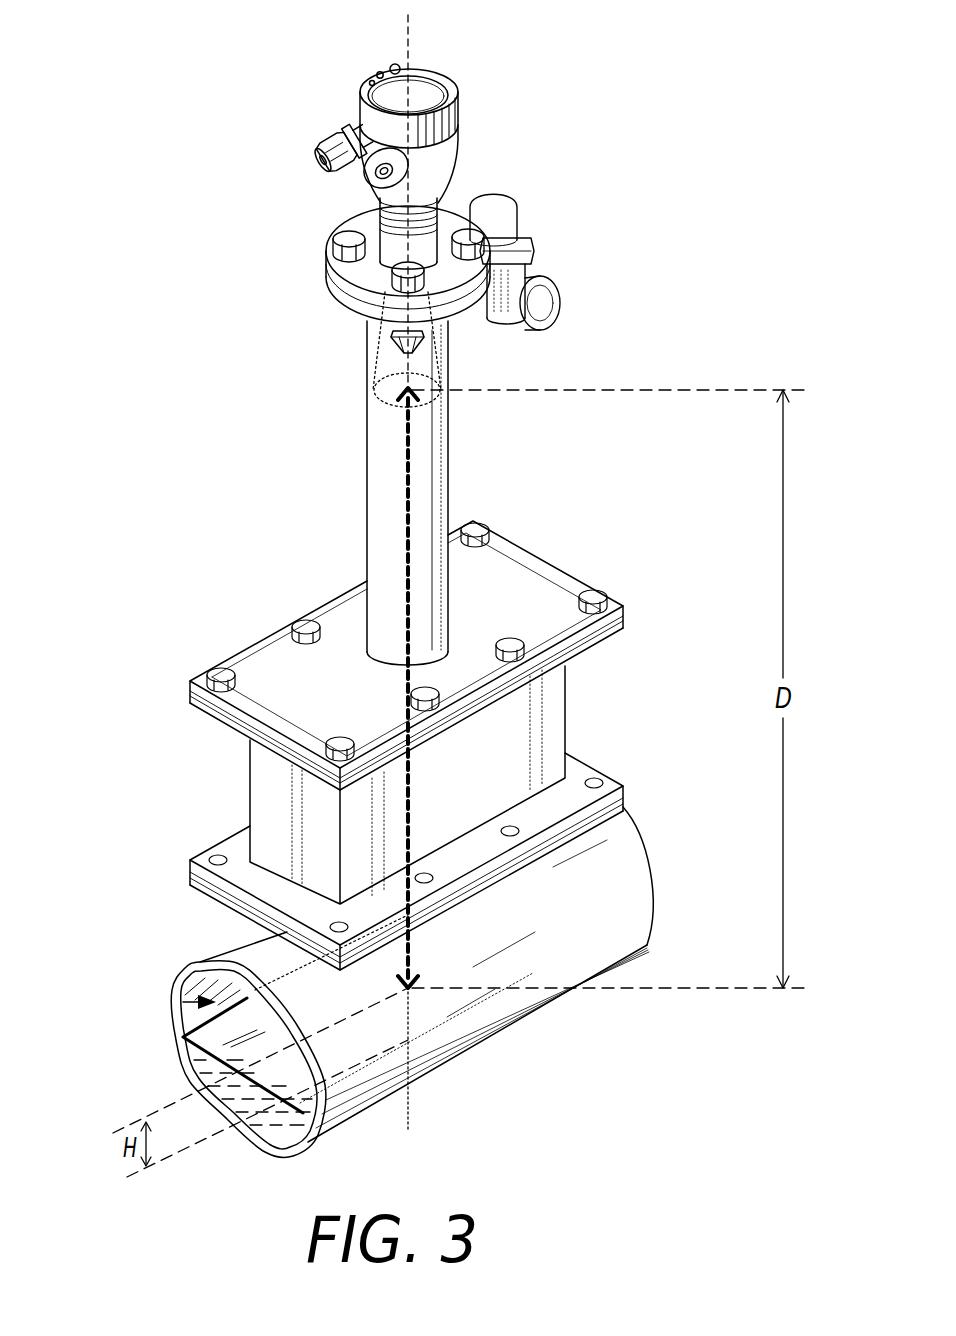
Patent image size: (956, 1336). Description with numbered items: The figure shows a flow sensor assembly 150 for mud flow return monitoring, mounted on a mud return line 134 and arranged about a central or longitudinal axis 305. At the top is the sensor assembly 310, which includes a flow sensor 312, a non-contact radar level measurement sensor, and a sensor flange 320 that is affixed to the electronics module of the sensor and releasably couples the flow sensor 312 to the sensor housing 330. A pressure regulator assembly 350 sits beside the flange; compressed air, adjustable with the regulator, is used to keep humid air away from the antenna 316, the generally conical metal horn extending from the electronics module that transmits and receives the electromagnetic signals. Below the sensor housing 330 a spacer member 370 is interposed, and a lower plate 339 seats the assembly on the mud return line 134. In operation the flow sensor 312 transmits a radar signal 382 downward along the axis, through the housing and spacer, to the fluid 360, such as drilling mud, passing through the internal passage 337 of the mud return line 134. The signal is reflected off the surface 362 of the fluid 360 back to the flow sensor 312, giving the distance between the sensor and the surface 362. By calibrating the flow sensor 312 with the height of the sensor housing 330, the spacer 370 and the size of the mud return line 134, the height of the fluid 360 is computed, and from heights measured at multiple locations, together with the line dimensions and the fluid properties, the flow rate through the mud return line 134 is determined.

The flow sensor assembly 150 is at (279, 66).
The central or longitudinal axis 305 is at (413, 38).
The sensor assembly 310 is at (447, 81).
The flow sensor 312 is at (457, 130).
The sensor flange 320 is at (350, 230).
The pressure regulator assembly 350 is at (530, 262).
The antenna 316 is at (374, 362).
The sensor housing 330 is at (450, 457).
The spacer member 370 is at (566, 705).
The radar signal 382 is at (410, 817).
The pipe mounting plate 339 is at (622, 805).
The mud return line 134 is at (630, 895).
The internal passage 337 is at (180, 1002).
The surface of the fluid 362 is at (182, 1073).
The fluid 360 is at (250, 1133).